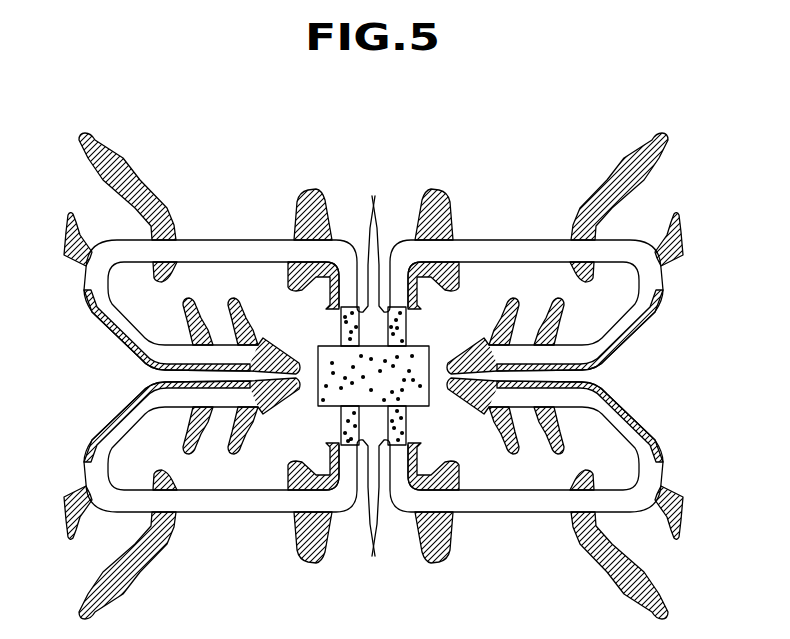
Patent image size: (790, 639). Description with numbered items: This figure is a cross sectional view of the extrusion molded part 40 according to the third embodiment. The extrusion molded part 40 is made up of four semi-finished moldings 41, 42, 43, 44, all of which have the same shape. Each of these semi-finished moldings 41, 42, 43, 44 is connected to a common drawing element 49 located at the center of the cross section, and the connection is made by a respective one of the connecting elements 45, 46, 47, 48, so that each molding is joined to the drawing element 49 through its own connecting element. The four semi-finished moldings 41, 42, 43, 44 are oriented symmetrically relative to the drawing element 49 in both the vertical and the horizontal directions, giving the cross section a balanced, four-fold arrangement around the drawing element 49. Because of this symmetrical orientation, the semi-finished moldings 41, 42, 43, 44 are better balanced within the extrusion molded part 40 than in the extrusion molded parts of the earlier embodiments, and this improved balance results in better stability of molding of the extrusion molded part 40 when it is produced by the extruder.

The extrusion molded part 40 is at (375, 189).
The semi-finished molding 41 is at (247, 255).
The semi-finished molding 42 is at (246, 500).
The semi-finished molding 43 is at (503, 500).
The semi-finished molding 44 is at (533, 253).
The connecting element 45 is at (357, 252).
The connecting element 46 is at (390, 252).
The connecting element 47 is at (357, 500).
The connecting element 48 is at (390, 500).
The drawing element 49 is at (410, 360).